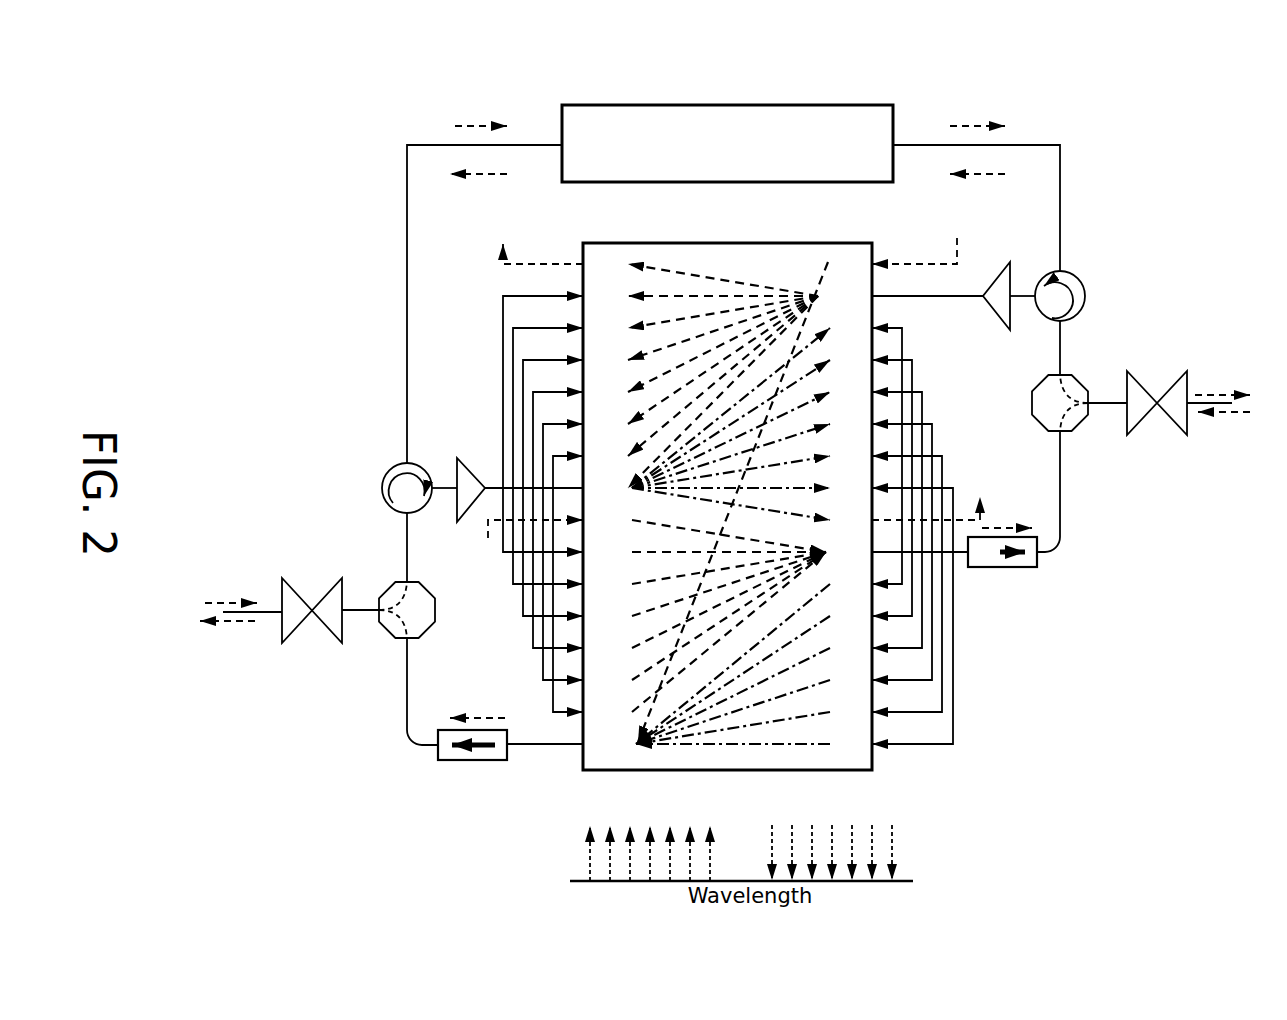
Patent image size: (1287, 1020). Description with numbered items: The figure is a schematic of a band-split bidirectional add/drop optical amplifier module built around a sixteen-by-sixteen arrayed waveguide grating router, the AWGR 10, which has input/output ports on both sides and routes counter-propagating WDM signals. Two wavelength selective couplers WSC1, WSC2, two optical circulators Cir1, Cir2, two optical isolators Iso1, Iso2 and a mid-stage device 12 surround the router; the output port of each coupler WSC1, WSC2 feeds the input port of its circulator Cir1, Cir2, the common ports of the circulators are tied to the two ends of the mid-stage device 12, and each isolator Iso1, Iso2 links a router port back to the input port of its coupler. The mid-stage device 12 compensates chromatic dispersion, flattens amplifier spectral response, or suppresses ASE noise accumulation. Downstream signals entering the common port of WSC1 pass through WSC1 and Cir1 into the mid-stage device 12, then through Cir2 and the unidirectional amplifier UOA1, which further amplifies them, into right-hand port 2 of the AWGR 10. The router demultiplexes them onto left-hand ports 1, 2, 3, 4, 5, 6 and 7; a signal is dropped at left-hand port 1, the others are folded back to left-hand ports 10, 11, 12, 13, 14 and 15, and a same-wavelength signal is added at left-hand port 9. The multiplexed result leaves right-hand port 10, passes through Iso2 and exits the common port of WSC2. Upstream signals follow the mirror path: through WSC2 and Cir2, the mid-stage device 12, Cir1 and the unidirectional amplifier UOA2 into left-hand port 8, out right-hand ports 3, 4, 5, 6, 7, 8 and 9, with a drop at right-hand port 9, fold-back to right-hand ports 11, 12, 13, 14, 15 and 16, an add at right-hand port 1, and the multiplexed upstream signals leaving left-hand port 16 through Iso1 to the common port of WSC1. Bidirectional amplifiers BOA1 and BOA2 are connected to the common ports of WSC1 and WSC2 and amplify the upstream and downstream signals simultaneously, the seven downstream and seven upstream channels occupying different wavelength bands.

The N×N AWGR 10 is at (727, 243).
The mid-stage device 12 is at (768, 105).
The port 1 is at (730, 267).
The port 2 is at (743, 419).
The port 3 is at (707, 440).
The port 4 is at (730, 392).
The port 5 is at (727, 472).
The port 6 is at (737, 488).
The port 7 is at (747, 504).
The port 8 is at (719, 520).
The port 9 is at (734, 520).
The port 11 is at (730, 648).
The port 13 is at (730, 648).
The port 14 is at (730, 648).
The port 15 is at (730, 648).
The port 16 is at (684, 508).
The optical circulator Cir1 is at (390, 491).
The optical circulator Cir2 is at (1072, 293).
The unidirectional amplifier UOA1 is at (984, 296).
The unidirectional amplifier UOA2 is at (459, 478).
The wavelength selective coupler WSC1 is at (396, 609).
The wavelength selective coupler WSC2 is at (1048, 405).
The bidirectional amplifier BOA1 is at (271, 621).
The bidirectional amplifier BOA2 is at (1188, 390).
The optical isolator Iso1 is at (473, 752).
The optical isolator Iso2 is at (1014, 560).